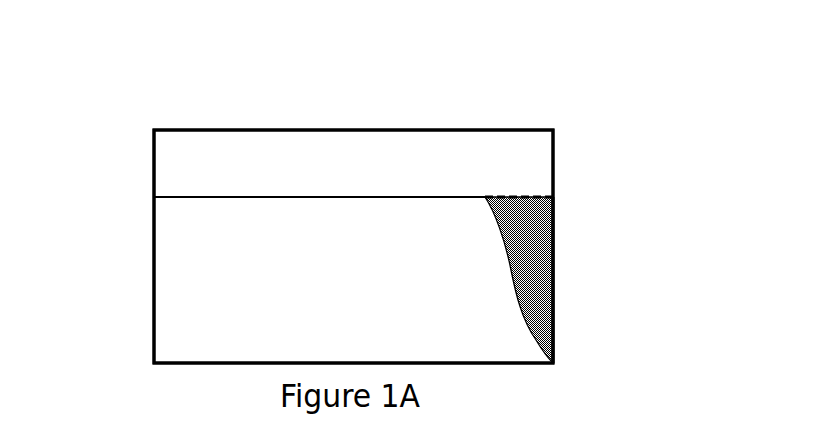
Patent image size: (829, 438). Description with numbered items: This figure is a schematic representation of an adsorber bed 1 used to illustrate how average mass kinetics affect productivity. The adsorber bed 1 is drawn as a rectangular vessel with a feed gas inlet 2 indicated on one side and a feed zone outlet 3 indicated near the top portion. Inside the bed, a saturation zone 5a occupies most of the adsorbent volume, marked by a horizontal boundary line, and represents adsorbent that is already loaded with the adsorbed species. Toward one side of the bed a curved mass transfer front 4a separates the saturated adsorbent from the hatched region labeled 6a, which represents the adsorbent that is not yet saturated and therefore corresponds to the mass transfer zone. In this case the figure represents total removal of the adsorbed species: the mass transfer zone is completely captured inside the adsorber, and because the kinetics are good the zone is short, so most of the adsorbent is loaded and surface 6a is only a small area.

The adsorber bed 1 is at (358, 118).
The feed gas inlet 2 is at (150, 271).
The feed zone outlet 3 is at (563, 160).
The mass transfer front 4a is at (508, 307).
The saturation zone 5a is at (342, 210).
The mass transfer zone 6a is at (537, 249).